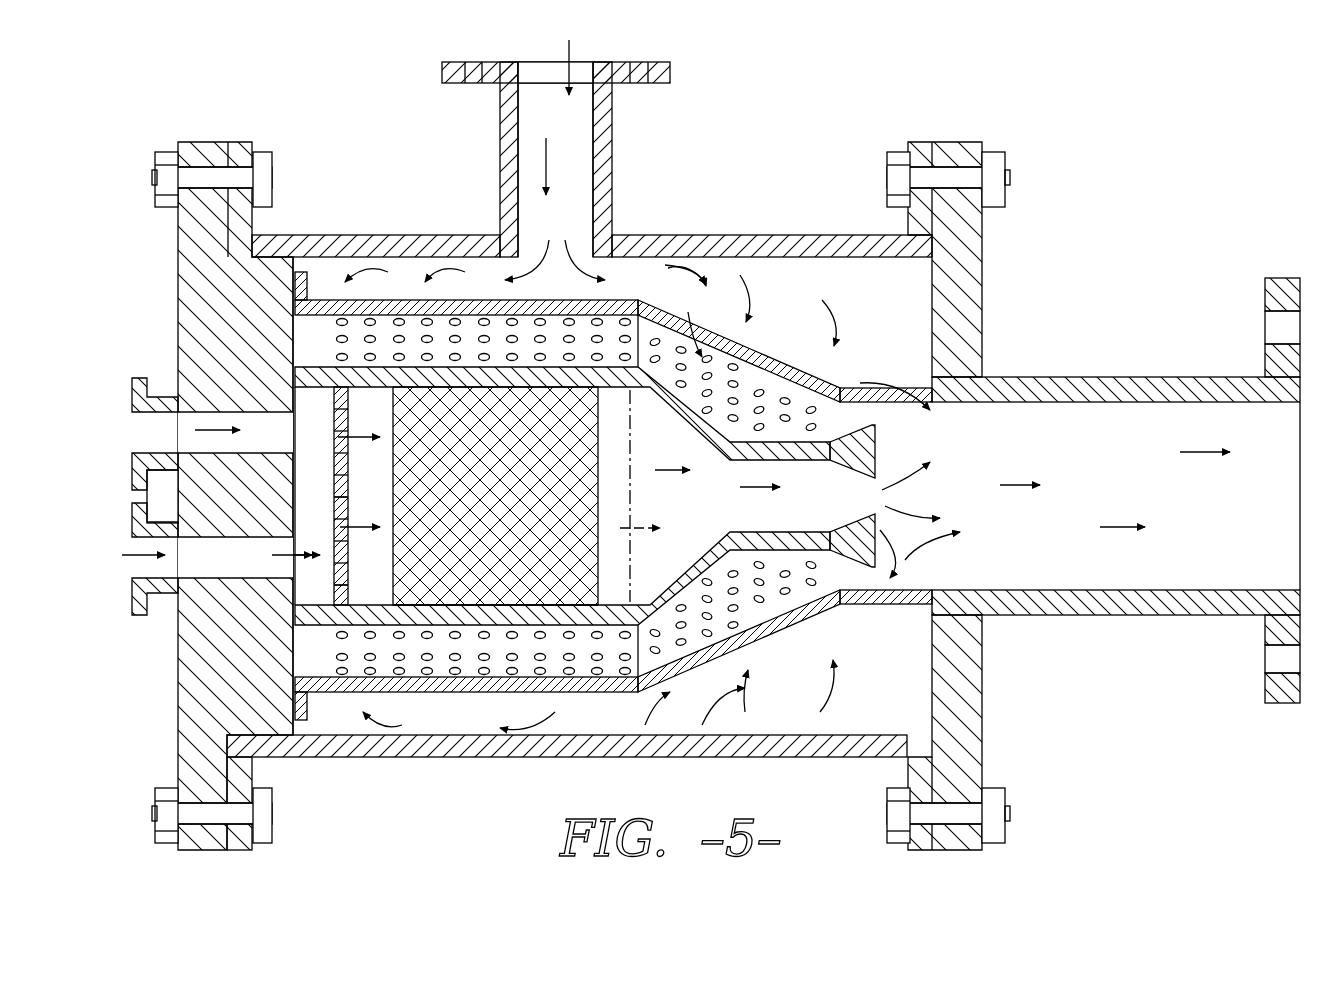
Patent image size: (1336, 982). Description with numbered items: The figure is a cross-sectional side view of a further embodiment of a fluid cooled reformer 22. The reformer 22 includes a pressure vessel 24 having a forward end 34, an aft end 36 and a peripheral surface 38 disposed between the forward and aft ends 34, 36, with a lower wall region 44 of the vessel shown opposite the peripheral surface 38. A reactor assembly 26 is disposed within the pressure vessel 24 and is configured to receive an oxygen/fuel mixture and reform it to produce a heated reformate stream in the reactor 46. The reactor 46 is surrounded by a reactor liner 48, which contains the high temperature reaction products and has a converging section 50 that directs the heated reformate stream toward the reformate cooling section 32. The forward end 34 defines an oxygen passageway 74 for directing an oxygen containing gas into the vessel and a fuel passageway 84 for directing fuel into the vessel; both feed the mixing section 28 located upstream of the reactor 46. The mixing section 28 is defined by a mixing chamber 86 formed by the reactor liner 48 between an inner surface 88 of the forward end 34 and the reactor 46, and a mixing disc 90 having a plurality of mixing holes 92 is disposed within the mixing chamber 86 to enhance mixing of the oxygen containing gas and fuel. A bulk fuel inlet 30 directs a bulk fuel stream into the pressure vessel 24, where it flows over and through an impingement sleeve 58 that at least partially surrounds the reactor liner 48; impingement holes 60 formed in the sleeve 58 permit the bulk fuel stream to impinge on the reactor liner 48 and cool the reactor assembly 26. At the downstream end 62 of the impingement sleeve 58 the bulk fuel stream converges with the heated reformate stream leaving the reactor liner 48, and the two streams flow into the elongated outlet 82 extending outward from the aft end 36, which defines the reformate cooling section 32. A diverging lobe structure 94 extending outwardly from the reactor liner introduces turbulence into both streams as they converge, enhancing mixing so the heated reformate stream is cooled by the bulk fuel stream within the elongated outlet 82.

The fluid cooled reformer 22 is at (691, 445).
The pressure vessel 24 is at (578, 496).
The reactor assembly 26 is at (495, 496).
The mixing section 28 is at (303, 425).
The bulk fuel inlet 30 is at (573, 160).
The reformate cooling section 32 is at (1116, 490).
The forward end 34 is at (185, 250).
The aft end 36 is at (970, 285).
The peripheral surface 38 is at (738, 226).
The housing lower wall 44 is at (960, 622).
The reactor 46 is at (553, 577).
The reactor liner 48 is at (578, 392).
The converging section 50 is at (680, 560).
The impingement sleeve 58 is at (445, 694).
The impingement holes 60 is at (785, 625).
The downstream end of the impingement sleeve 62 is at (862, 392).
The oxygen passageway 74 is at (148, 430).
The elongated outlet 82 is at (1148, 618).
The fuel passageway 84 is at (147, 567).
The mixing chamber 86 is at (360, 496).
The inner surface 88 is at (298, 500).
The mixing disc 90 is at (350, 578).
The mixing holes 92 is at (350, 502).
The diverging lobe structure 94 is at (860, 517).